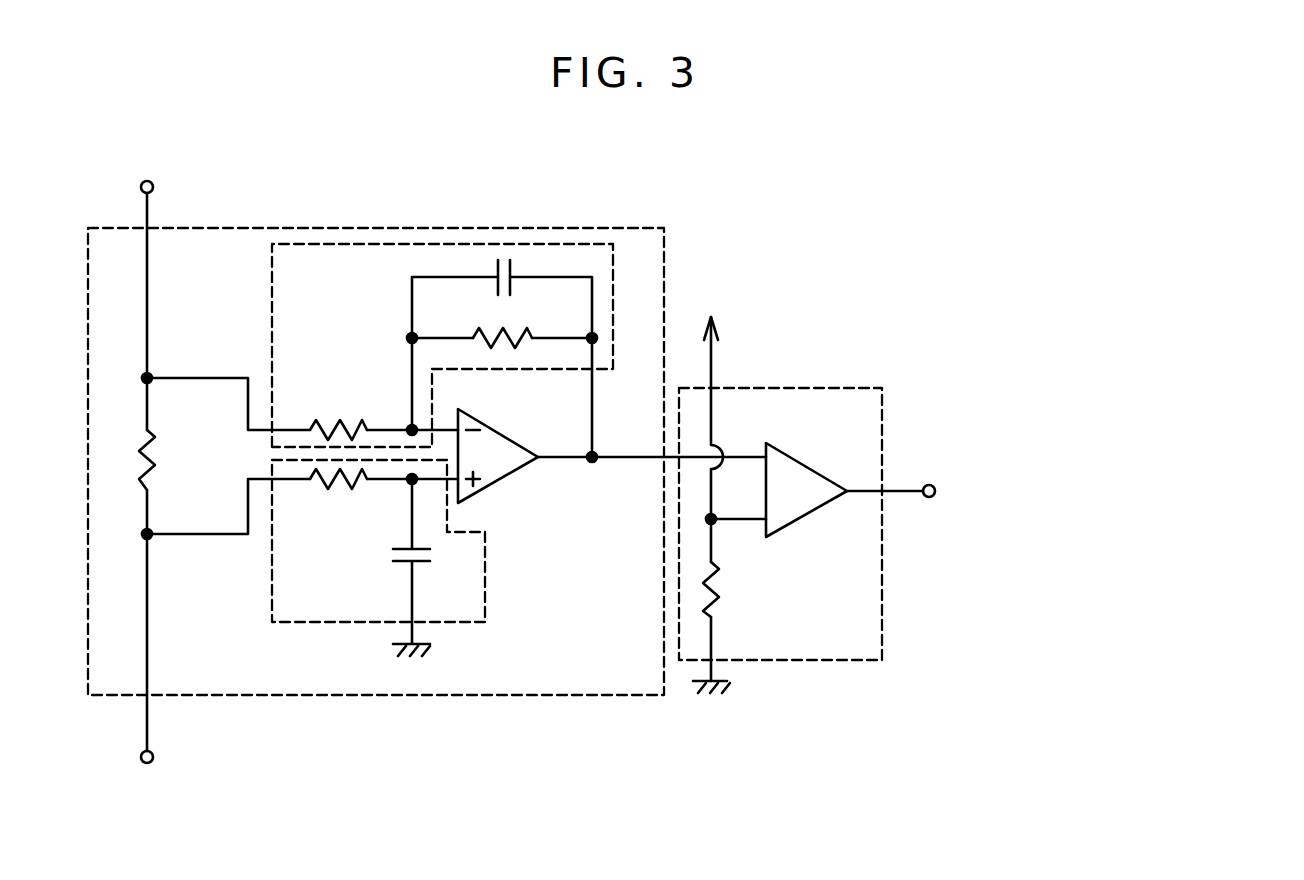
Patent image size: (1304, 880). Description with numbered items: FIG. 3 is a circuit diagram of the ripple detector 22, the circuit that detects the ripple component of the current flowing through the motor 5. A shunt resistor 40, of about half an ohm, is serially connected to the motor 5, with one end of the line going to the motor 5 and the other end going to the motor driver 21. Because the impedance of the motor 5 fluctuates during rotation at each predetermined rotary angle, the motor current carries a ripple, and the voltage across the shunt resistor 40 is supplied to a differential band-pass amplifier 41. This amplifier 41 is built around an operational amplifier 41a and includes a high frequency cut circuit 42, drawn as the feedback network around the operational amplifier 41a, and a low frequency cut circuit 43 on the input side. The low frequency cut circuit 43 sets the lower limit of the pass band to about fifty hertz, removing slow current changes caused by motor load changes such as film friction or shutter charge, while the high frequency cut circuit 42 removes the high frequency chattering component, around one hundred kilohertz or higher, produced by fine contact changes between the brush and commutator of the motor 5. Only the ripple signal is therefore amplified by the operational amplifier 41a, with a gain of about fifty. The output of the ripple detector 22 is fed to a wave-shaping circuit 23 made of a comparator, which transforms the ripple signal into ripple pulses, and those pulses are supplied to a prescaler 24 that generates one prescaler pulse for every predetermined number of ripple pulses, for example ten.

The motor 5 is at (226, 169).
The motor driver 21 is at (296, 775).
The ripple detector 22 is at (667, 253).
The wave-shaping circuit 23 is at (803, 388).
The prescaler 24 is at (1099, 494).
The shunt resistor 40 is at (160, 462).
The differential band-pass amplifier 41 is at (498, 503).
The operational amplifier 41a is at (500, 449).
The high frequency cut circuit 42 is at (464, 243).
The low frequency cut circuit 43 is at (271, 601).